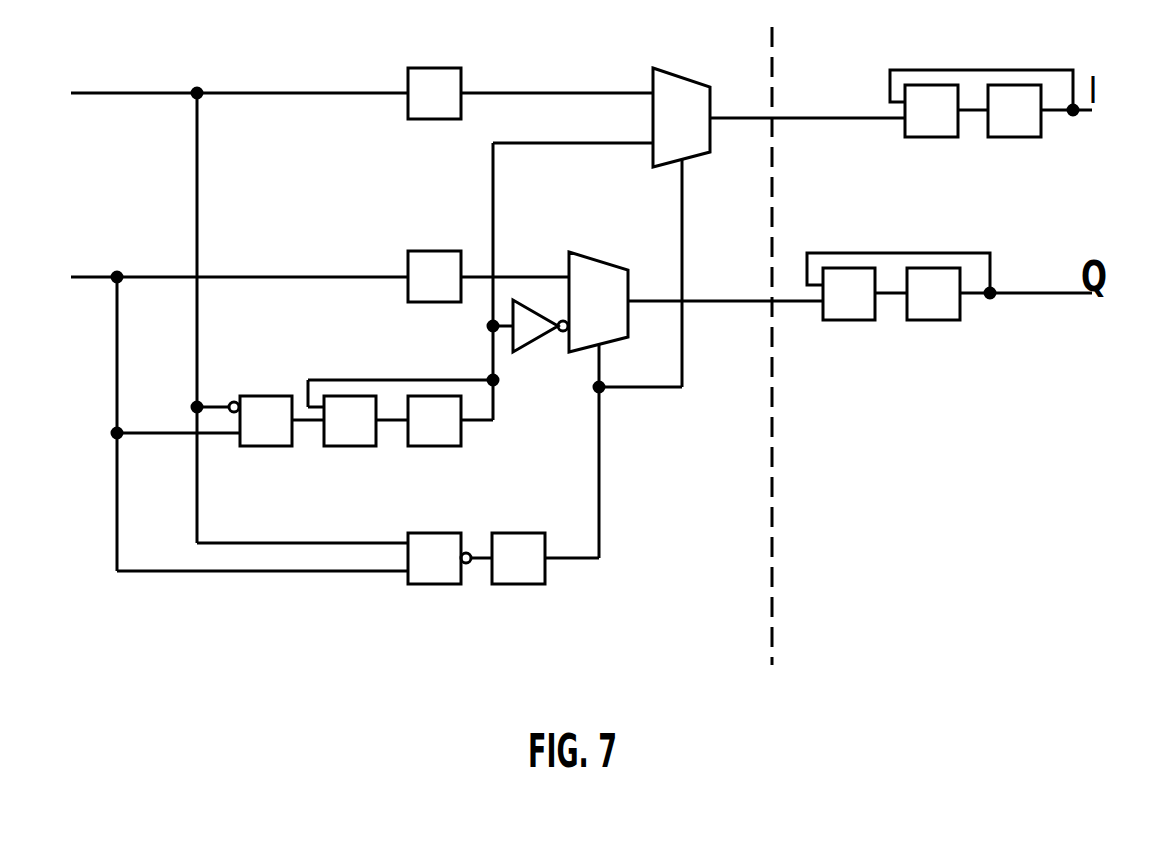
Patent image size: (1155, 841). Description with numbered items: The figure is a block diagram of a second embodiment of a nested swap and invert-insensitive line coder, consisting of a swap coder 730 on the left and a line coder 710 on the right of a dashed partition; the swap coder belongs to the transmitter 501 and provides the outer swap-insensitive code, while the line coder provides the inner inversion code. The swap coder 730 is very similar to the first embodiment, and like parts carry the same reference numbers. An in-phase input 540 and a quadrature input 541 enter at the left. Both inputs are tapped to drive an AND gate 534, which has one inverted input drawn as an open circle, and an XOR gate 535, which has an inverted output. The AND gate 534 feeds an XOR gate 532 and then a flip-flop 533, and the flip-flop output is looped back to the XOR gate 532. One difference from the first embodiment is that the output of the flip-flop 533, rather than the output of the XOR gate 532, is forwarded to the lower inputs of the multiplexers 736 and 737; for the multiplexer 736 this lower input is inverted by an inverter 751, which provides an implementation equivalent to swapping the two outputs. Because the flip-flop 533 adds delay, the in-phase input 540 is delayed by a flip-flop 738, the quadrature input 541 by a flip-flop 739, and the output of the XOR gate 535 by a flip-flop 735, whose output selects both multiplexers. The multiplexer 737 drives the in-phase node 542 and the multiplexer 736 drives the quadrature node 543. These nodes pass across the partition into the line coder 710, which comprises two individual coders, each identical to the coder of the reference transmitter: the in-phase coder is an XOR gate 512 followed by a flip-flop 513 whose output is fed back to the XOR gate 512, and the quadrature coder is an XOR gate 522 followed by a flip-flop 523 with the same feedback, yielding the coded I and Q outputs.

The transmitter 501 is at (178, 627).
The XOR gate 512 is at (930, 139).
The flip-flop 513 is at (1013, 139).
The XOR gate 522 is at (848, 322).
The flip-flop 523 is at (932, 322).
The XOR gate 532 is at (348, 449).
The flip-flop 533 is at (432, 449).
The AND gate 534 is at (265, 449).
The XOR gate 535 is at (432, 587).
The in-phase input 540 is at (80, 96).
The quadrature input 541 is at (80, 280).
The in-phase node 542 is at (728, 115).
The quadrature node 543 is at (713, 304).
The line coder 710 is at (858, 515).
The swap coder 730 is at (665, 607).
The flip-flop 735 is at (516, 587).
The multiplexer 736 is at (605, 263).
The multiplexer 737 is at (700, 155).
The flip-flop 738 is at (433, 66).
The flip-flop 739 is at (433, 249).
The inverter 751 is at (533, 343).